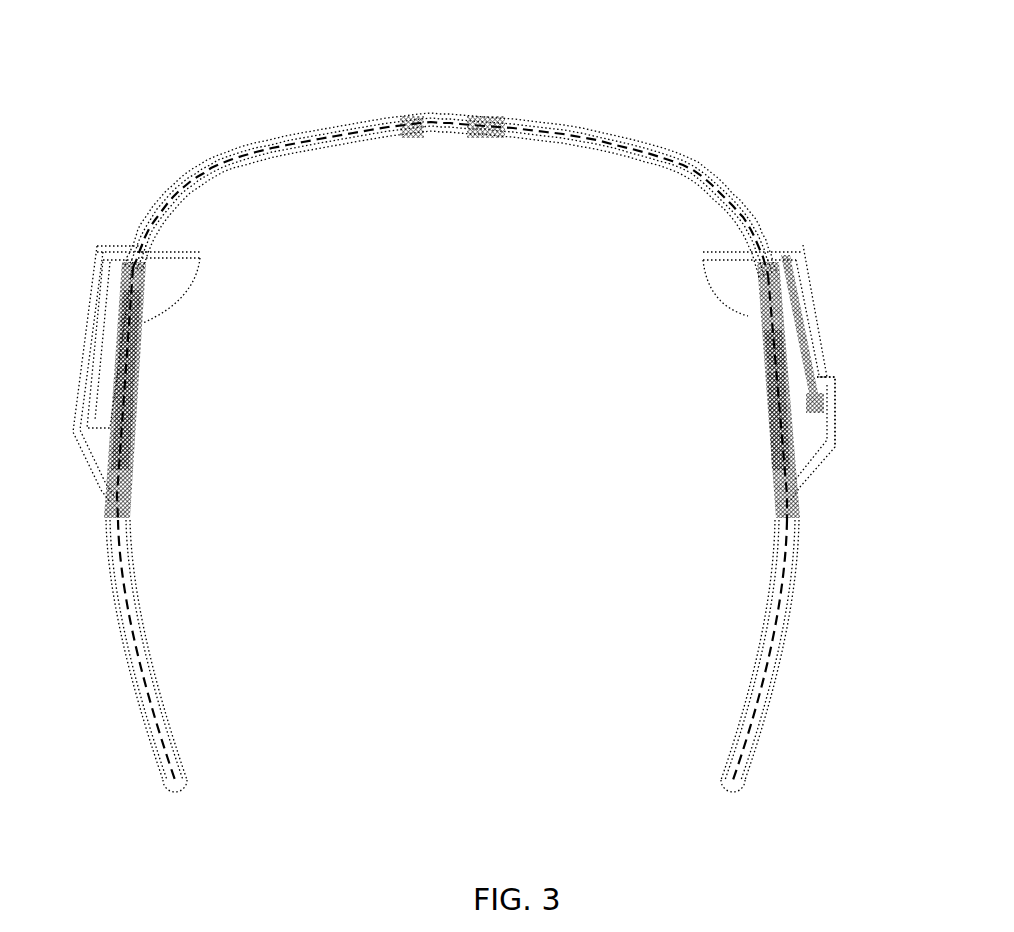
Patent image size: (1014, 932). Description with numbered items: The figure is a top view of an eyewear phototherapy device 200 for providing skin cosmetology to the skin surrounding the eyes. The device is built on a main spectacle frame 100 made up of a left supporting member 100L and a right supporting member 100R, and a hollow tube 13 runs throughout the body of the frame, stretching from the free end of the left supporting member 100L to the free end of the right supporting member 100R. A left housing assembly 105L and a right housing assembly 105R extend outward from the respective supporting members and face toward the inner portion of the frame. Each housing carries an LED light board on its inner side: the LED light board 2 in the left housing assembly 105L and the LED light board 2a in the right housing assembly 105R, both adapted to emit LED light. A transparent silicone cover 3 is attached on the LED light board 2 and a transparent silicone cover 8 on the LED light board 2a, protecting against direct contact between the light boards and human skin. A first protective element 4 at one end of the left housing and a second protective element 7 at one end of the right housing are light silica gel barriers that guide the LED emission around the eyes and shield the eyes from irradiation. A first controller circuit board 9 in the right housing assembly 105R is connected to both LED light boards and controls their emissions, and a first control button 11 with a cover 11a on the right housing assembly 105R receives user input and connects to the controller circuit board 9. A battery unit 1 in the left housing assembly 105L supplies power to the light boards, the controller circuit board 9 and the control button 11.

The eyewear phototherapy device 200 is at (541, 75).
The main spectacle frame 100 is at (420, 118).
The hollow tube 13 is at (232, 162).
The left housing assembly 105L is at (95, 262).
The battery unit 1 is at (108, 330).
The first protective element 4 is at (186, 285).
The transparent silicone cover 3 is at (134, 383).
The LED light board 2 is at (120, 453).
The second protective element 7 is at (722, 285).
The first controller circuit board 9 is at (792, 298).
The LED light board 2a is at (782, 350).
The right housing assembly 105R is at (823, 335).
The transparent silicone cover 8 is at (768, 390).
The cover 11a is at (837, 397).
The first control button 11 is at (820, 416).
The left supporting member 100L is at (178, 790).
The right supporting member 100R is at (730, 790).